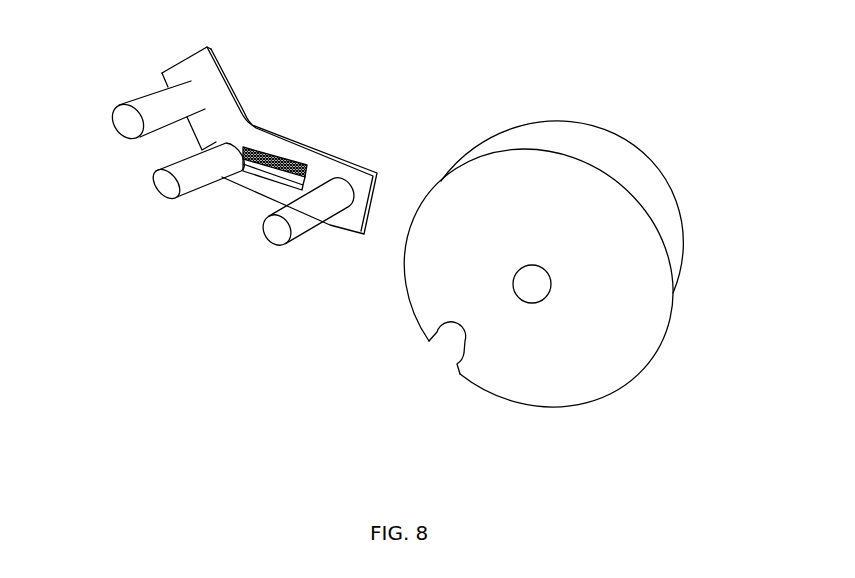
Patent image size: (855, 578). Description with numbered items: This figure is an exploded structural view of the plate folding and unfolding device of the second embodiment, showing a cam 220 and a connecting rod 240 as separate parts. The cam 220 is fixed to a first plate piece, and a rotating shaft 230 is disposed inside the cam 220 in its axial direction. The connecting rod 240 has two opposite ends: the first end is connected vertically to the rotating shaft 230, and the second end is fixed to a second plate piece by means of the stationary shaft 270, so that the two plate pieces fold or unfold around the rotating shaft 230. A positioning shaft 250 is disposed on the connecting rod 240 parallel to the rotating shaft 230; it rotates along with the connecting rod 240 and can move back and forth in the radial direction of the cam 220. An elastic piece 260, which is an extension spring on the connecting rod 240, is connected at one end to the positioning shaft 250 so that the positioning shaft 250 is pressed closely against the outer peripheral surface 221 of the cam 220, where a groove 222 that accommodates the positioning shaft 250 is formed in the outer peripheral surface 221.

The cam 220 is at (595, 357).
The outer peripheral surface 221 is at (642, 176).
The groove 222 is at (450, 342).
The rotating shaft 230 is at (305, 213).
The connecting rod 240 is at (221, 118).
The positioning shaft 250 is at (200, 170).
The elastic piece 260 is at (287, 160).
The stationary shaft 270 is at (163, 107).